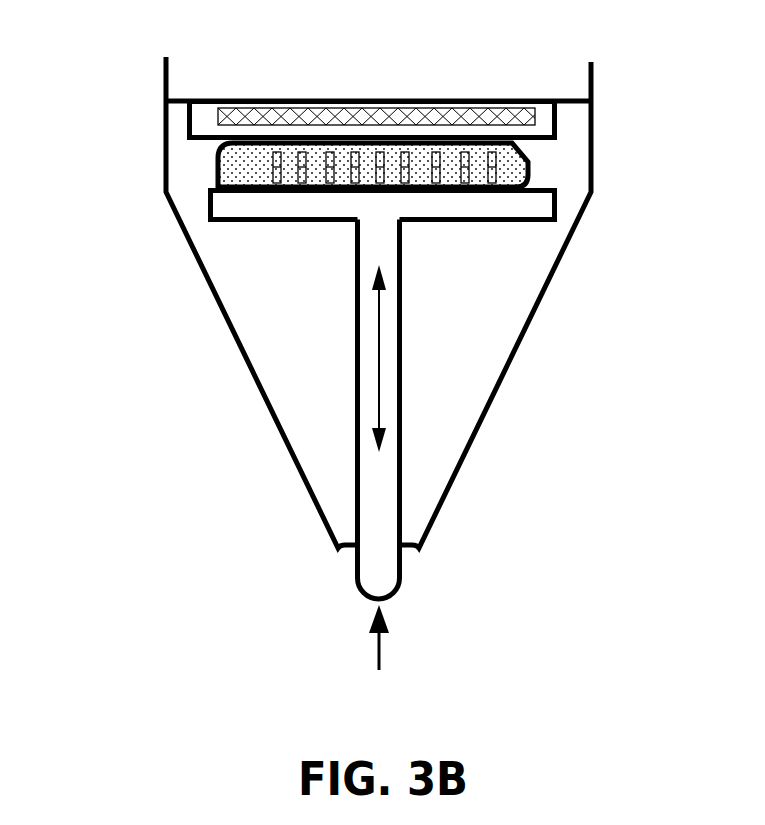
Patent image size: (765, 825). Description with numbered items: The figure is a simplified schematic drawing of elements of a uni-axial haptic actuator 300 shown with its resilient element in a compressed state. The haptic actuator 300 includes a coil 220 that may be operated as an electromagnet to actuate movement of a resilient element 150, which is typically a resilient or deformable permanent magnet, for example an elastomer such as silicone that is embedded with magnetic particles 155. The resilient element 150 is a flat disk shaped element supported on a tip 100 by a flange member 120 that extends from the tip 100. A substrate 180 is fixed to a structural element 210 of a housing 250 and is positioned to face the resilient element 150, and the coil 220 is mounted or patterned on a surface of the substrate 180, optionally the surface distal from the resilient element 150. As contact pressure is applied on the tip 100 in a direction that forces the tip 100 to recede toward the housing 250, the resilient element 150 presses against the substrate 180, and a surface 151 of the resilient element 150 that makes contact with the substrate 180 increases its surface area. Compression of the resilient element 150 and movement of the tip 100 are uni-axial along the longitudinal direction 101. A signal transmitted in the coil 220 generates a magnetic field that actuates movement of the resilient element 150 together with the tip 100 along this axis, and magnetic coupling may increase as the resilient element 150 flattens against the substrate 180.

The haptic actuator 300 is at (172, 150).
The substrate 180 is at (562, 110).
The housing 250 is at (505, 368).
The structural element 210 is at (167, 99).
The coil 220 is at (400, 100).
The surface of resilient element 151 is at (488, 140).
The resilient element 150 is at (217, 170).
The magnetic particles 155 is at (528, 165).
The flange member 120 is at (472, 220).
The tip 100 is at (398, 440).
The longitudinal direction 101 is at (380, 333).